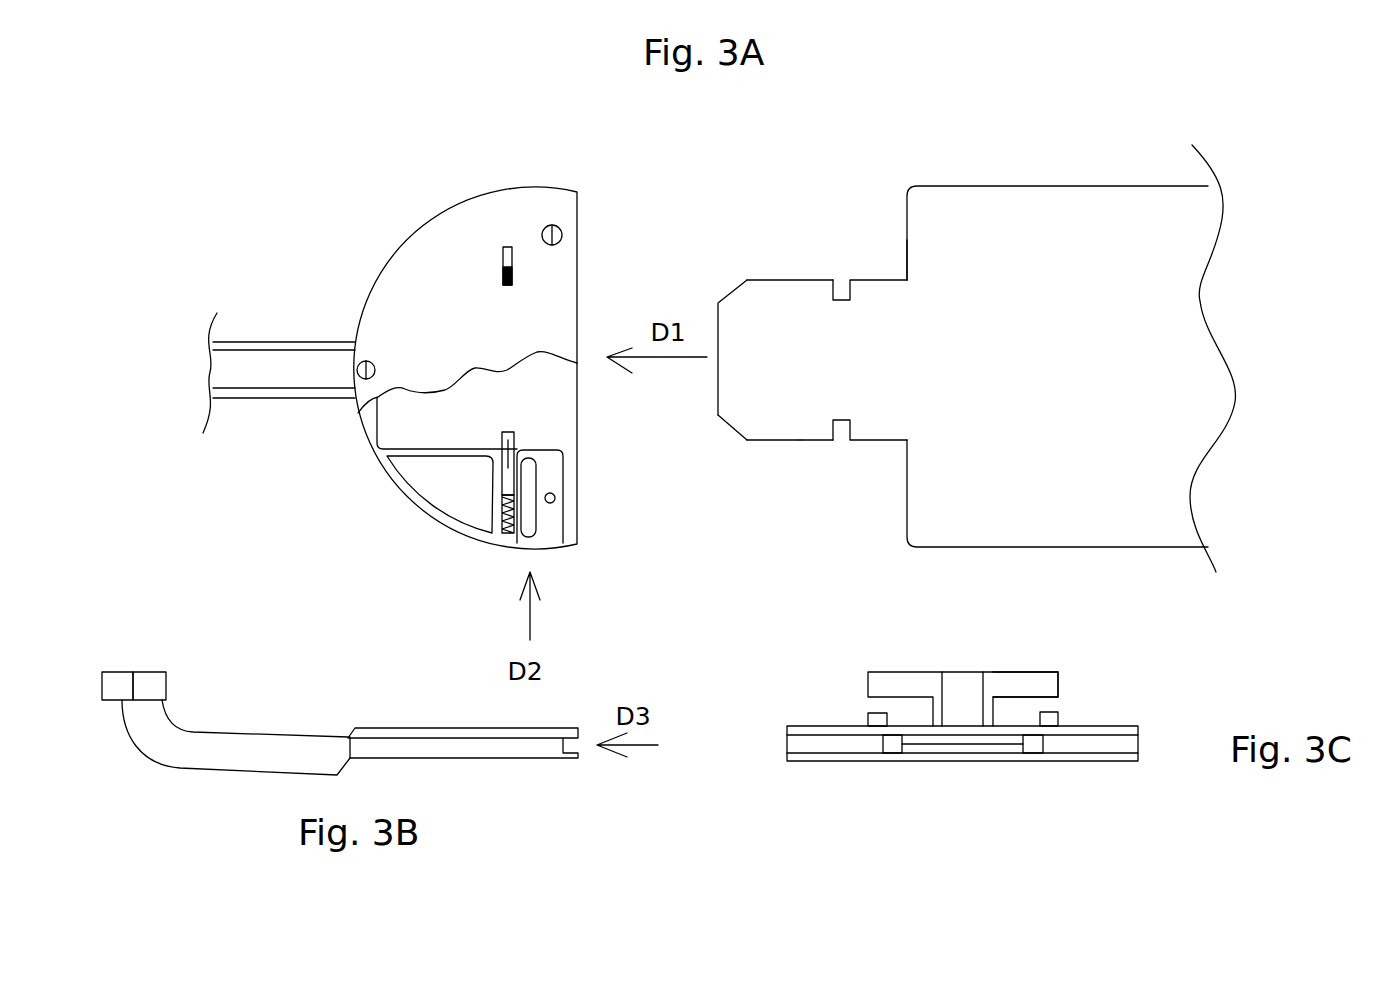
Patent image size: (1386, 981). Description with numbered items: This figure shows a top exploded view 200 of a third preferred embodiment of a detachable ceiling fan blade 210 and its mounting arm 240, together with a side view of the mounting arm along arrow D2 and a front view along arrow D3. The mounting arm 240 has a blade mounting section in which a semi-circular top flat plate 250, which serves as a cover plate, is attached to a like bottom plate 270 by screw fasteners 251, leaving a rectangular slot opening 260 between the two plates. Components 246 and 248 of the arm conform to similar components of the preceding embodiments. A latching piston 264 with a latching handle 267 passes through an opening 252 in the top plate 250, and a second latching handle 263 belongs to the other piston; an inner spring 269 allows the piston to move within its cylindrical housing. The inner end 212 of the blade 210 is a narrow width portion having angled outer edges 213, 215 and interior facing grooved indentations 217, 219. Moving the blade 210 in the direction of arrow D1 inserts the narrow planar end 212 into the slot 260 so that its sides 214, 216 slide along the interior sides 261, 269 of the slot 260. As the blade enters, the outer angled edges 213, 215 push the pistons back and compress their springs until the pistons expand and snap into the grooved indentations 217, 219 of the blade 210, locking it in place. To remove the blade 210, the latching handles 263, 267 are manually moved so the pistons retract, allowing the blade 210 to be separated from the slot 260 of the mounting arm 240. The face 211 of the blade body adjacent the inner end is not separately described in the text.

In FIG. 3A, the top exploded view 200 is at (322, 158).
In FIG. 3A, the ceiling fan blade 210 is at (1017, 219).
In FIG. 3A, the shoulder face 211 is at (909, 266).
In FIG. 3A, the inner end 212 is at (802, 418).
In FIG. 3A, the angled outer edge 213 is at (735, 430).
In FIG. 3A, the side 214 is at (822, 440).
In FIG. 3A, the angled outer edge 215 is at (732, 293).
In FIG. 3A, the side 216 is at (773, 277).
In FIG. 3A, the grooved indentation 217 is at (855, 296).
In FIG. 3A, the grooved indentation 219 is at (853, 430).
In FIG. 3B, the mounting arm 240 is at (273, 692).
In FIG. 3A, the arm component 246 is at (297, 367).
In FIG. 3C, the arm component 246 is at (958, 673).
In FIG. 3B, the arm component 248 is at (119, 680).
In FIG. 3C, the arm component 248 is at (1033, 678).
In FIG. 3A, the top flat plate 250 is at (421, 296).
In FIG. 3B, the top flat plate 250 is at (427, 727).
In FIG. 3C, the top flat plate 250 is at (922, 725).
In FIG. 3A, the screw fastener 251 is at (547, 227).
In FIG. 3A, the opening 252 is at (497, 247).
In FIG. 3A, the rectangular slot opening 260 is at (540, 450).
In FIG. 3C, the rectangular slot opening 260 is at (987, 743).
In FIG. 3C, the interior side 261 is at (903, 745).
In FIG. 3C, the latching handle 263 is at (1058, 718).
In FIG. 3A, the latching piston 264 is at (497, 533).
In FIG. 3C, the latching handle 267 is at (872, 715).
In FIG. 3C, the inner spring 269 is at (1013, 745).
In FIG. 3A, the bottom plate 270 is at (413, 422).
In FIG. 3C, the bottom plate 270 is at (963, 747).